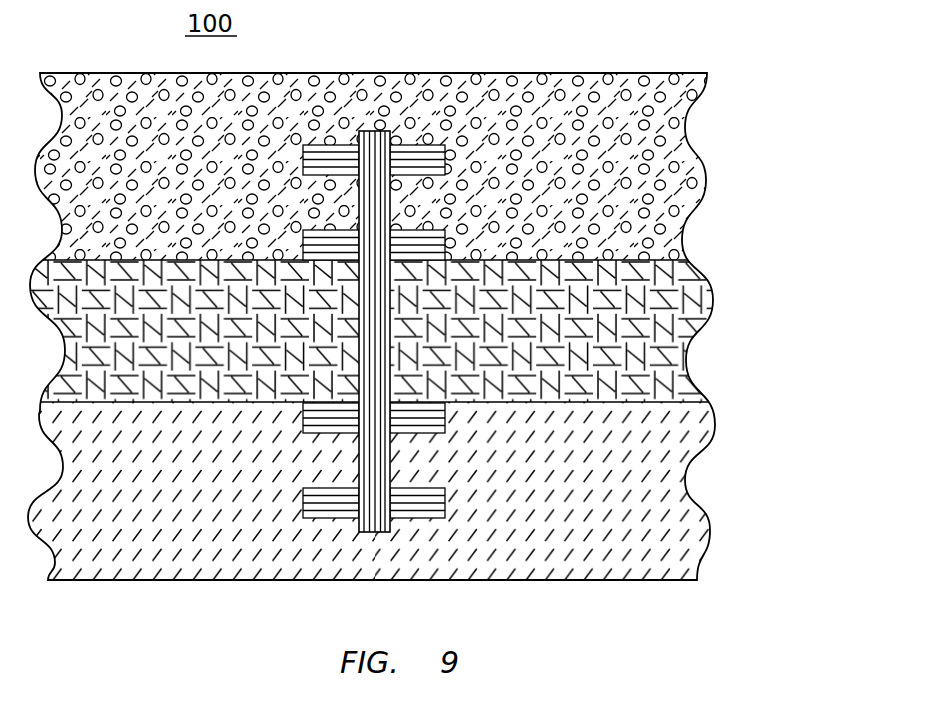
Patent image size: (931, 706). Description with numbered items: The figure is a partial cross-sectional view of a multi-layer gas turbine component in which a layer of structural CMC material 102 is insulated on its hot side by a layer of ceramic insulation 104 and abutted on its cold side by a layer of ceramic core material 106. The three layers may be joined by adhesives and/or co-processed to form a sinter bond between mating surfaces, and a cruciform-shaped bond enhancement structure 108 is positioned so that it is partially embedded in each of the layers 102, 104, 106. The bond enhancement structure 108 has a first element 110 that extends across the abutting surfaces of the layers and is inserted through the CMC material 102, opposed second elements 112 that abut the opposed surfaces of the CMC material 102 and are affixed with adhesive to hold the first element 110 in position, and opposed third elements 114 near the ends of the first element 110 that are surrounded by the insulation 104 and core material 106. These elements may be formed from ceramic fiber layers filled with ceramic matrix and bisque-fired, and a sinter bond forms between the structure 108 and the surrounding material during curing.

The layer of structural CMC material 102 is at (712, 318).
The layer of ceramic insulation 104 is at (683, 128).
The layer of ceramic core material 106 is at (710, 530).
The cruciform-shaped bond enhancement structure 108 is at (412, 333).
The first element 110 is at (392, 305).
The second elements 112 is at (445, 237).
The third elements 114 is at (445, 157).